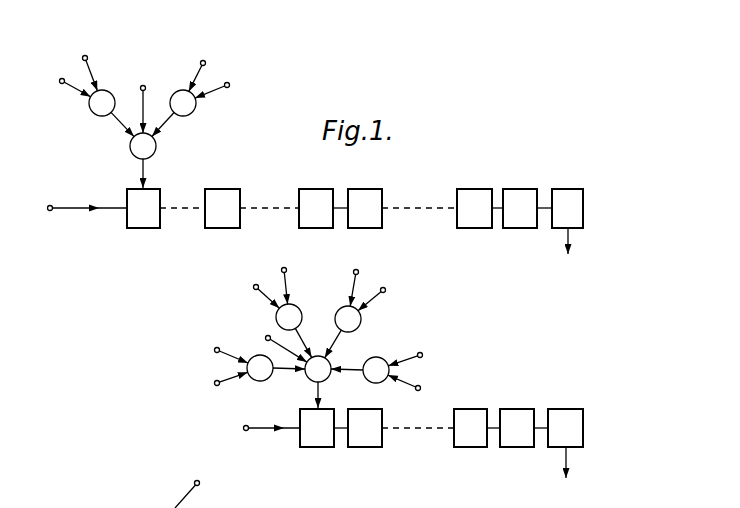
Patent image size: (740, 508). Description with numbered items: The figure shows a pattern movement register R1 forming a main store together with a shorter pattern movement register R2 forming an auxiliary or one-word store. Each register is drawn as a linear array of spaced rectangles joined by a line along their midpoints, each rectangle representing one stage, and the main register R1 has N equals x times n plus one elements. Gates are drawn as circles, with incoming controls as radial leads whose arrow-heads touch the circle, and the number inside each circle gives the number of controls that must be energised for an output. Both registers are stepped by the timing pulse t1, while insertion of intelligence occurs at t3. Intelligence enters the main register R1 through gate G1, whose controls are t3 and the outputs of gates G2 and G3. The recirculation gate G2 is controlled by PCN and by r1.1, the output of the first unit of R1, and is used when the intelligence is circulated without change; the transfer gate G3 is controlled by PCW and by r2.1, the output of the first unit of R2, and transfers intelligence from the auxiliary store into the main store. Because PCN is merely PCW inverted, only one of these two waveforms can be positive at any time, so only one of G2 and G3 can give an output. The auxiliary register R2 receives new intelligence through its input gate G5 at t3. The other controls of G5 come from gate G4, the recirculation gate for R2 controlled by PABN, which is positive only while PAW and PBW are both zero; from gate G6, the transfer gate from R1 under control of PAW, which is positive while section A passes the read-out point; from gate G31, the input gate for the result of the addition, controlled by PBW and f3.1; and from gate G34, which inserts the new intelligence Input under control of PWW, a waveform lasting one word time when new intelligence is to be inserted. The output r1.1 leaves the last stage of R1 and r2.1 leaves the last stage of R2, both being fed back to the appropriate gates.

The input gate G1 is at (157, 146).
The recirculation gate G2 is at (179, 94).
The transfer gate G3 is at (102, 112).
The addition result input gate G31 is at (301, 307).
The transfer gate G6 is at (360, 319).
The new intelligence insertion gate G34 is at (263, 378).
The input gate G5 is at (325, 377).
The recirculation gate G4 is at (377, 381).
The pattern movement register R1 is at (355, 199).
The auxiliary pattern movement register R2 is at (441, 415).
The write waveform PCW is at (107, 70).
The inverted write waveform PCN is at (210, 280).
The section B waveform PBW is at (296, 273).
The section A waveform PAW is at (367, 274).
The new word waveform PWW is at (211, 349).
The inverted section waveform PABN is at (430, 354).
The stepping timing pulse t1 is at (173, 305).
The insertion timing pulse t3 is at (223, 212).
The output from unit 1 of R1 r1.1 is at (387, 194).
The output from unit 1 of R2 r2.1 is at (310, 289).
The addition result signal f3.1 is at (253, 285).
The new intelligence input Input is at (206, 379).